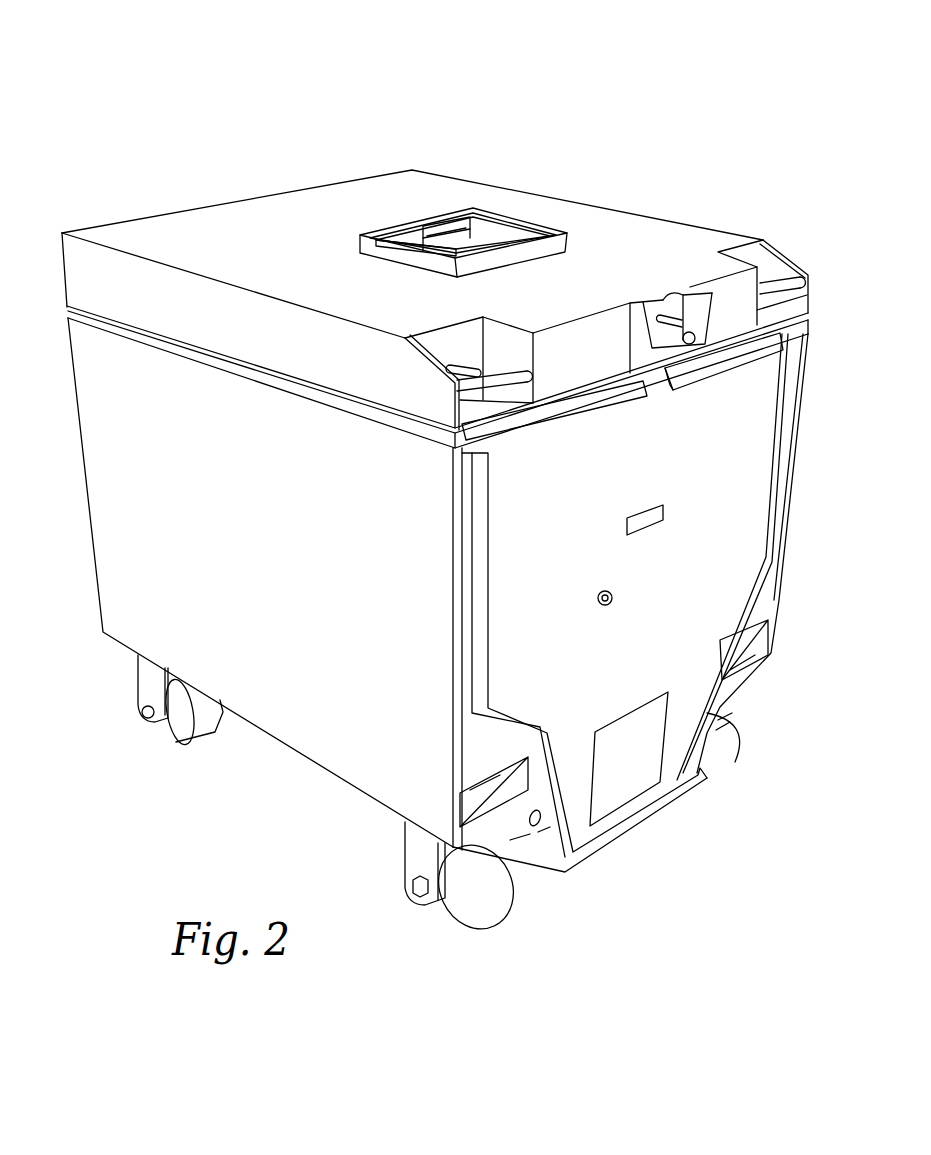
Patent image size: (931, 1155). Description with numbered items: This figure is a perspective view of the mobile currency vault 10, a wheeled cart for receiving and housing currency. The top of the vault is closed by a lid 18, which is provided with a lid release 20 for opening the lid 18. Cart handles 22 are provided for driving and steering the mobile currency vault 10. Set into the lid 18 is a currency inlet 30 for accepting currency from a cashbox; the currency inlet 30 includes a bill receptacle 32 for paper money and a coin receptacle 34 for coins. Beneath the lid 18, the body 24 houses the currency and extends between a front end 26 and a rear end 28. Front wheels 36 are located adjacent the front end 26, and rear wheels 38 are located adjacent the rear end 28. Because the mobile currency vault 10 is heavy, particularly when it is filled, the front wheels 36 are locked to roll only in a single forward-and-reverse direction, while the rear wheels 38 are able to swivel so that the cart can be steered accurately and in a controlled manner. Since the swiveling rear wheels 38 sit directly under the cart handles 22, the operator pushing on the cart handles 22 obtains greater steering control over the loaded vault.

The mobile currency vault 10 is at (253, 98).
The lid 18 is at (193, 245).
The lid release 20 is at (667, 282).
The cart handles 22 is at (500, 380).
The body 24 is at (165, 525).
The front end 26 is at (58, 322).
The rear end 28 is at (800, 478).
The currency inlet 30 is at (547, 245).
The bill receptacle 32 is at (408, 232).
The coin receptacle 34 is at (492, 225).
The front wheels 36 is at (177, 715).
The rear wheels 38 is at (480, 892).